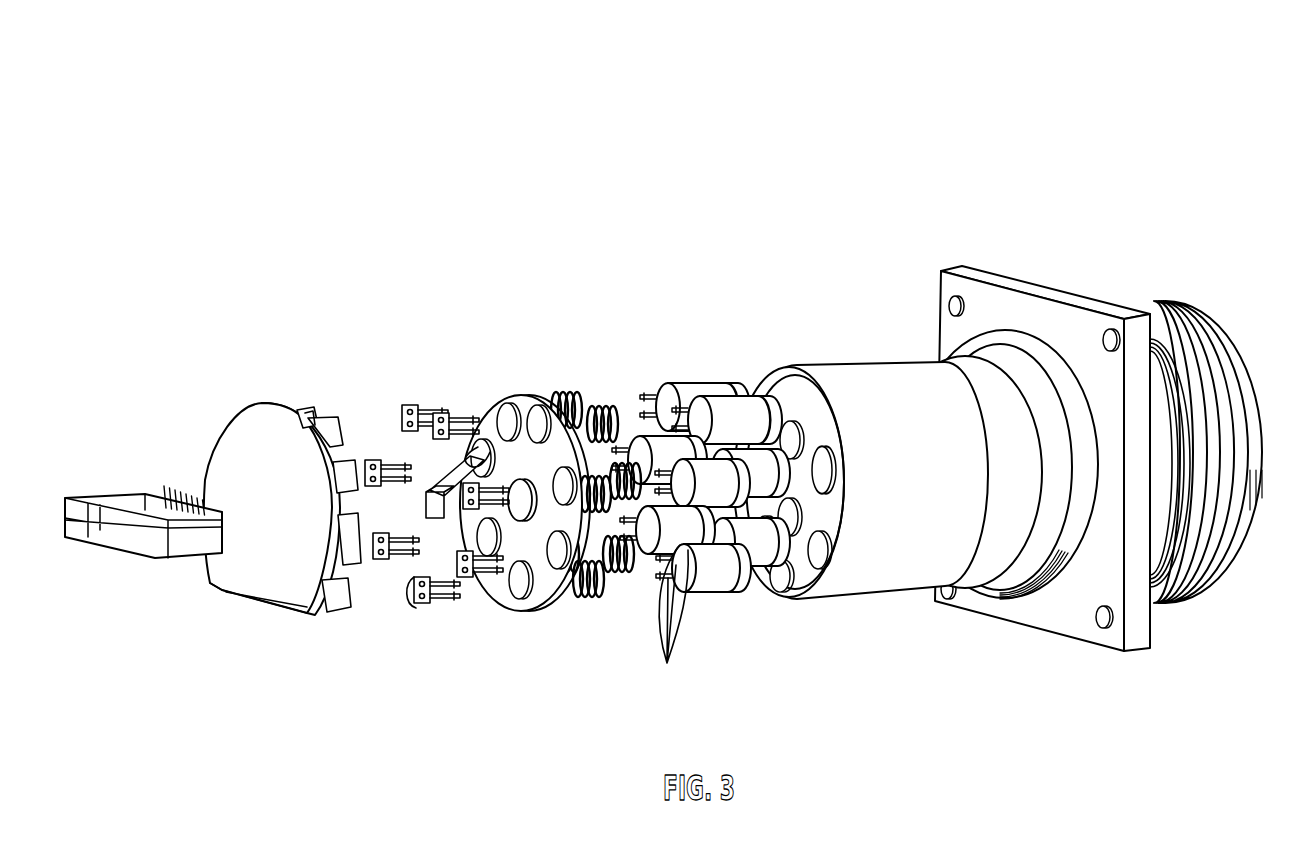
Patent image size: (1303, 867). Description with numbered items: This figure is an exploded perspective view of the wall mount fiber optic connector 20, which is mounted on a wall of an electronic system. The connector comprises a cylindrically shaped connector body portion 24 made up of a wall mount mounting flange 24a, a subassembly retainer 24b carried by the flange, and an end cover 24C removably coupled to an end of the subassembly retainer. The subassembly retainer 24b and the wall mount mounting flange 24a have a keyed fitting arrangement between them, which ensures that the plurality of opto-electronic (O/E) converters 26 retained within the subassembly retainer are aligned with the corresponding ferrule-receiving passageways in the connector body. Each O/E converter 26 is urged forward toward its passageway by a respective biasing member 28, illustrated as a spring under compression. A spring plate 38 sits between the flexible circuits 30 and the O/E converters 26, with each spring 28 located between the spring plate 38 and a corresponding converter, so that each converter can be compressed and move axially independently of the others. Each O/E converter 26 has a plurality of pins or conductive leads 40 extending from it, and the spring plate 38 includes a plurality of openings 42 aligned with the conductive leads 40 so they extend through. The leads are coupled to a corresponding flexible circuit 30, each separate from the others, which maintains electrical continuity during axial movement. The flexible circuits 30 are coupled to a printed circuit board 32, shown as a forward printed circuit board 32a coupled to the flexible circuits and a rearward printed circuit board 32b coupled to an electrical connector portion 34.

The wall mount fiber optic connector 20 is at (513, 133).
The connector body portion 24 is at (1143, 299).
The wall mount mounting flange 24a is at (960, 271).
The subassembly retainer 24b is at (878, 565).
The end cover 24C is at (233, 417).
The opto-electronic (O/E) converters 26 is at (732, 388).
The biasing member 28 is at (612, 397).
The flexible circuits 30 is at (452, 405).
The printed circuit board 32 is at (305, 412).
The forward printed circuit board 32a is at (335, 430).
The rearward printed circuit board 32b is at (303, 411).
The electrical connector portion 34 is at (118, 497).
The spring plate 38 is at (527, 395).
The conductive leads 40 is at (669, 623).
The openings 42 is at (538, 596).